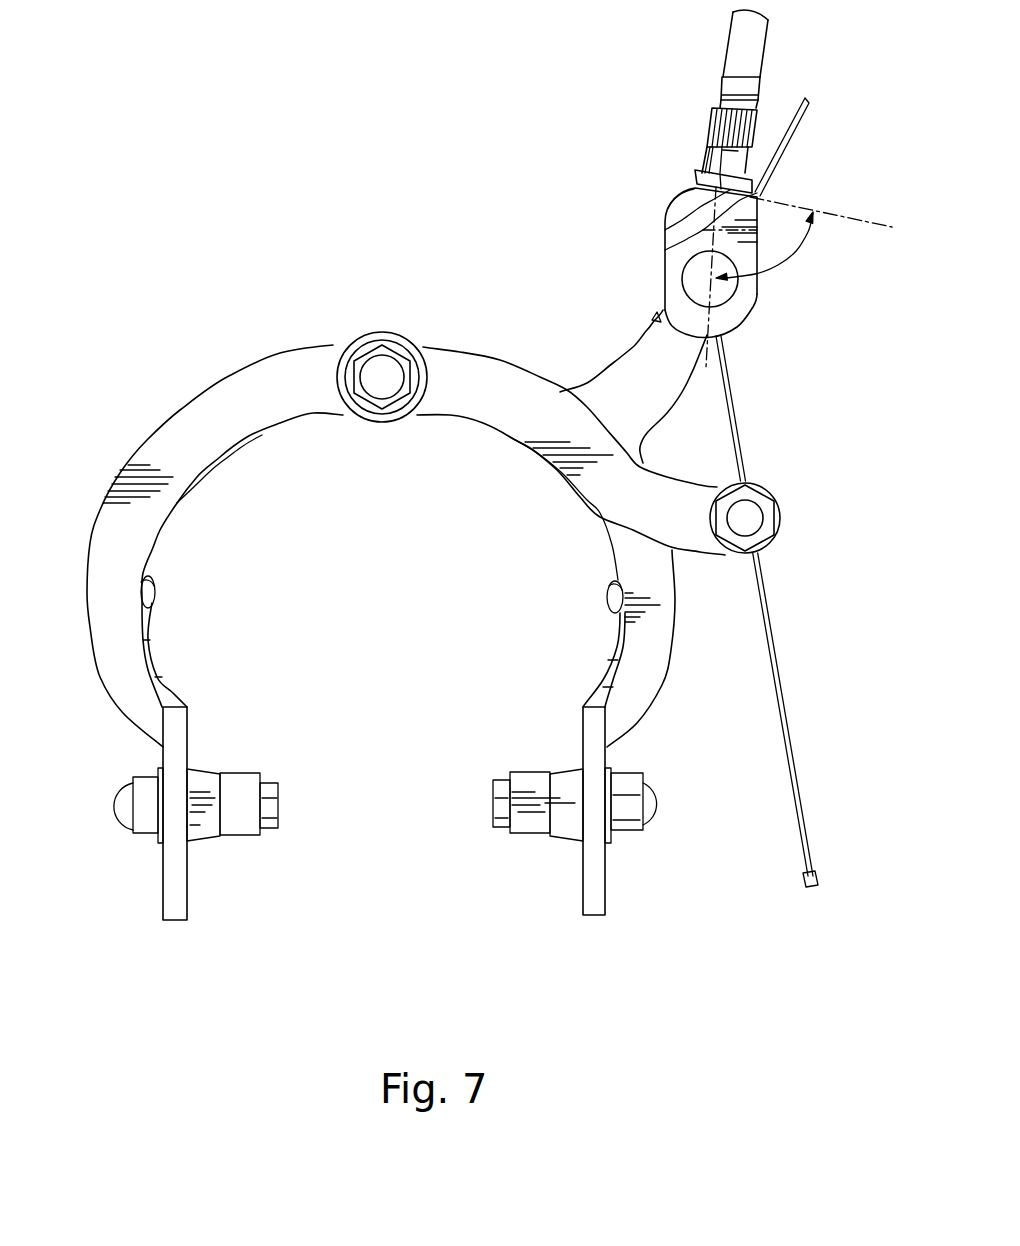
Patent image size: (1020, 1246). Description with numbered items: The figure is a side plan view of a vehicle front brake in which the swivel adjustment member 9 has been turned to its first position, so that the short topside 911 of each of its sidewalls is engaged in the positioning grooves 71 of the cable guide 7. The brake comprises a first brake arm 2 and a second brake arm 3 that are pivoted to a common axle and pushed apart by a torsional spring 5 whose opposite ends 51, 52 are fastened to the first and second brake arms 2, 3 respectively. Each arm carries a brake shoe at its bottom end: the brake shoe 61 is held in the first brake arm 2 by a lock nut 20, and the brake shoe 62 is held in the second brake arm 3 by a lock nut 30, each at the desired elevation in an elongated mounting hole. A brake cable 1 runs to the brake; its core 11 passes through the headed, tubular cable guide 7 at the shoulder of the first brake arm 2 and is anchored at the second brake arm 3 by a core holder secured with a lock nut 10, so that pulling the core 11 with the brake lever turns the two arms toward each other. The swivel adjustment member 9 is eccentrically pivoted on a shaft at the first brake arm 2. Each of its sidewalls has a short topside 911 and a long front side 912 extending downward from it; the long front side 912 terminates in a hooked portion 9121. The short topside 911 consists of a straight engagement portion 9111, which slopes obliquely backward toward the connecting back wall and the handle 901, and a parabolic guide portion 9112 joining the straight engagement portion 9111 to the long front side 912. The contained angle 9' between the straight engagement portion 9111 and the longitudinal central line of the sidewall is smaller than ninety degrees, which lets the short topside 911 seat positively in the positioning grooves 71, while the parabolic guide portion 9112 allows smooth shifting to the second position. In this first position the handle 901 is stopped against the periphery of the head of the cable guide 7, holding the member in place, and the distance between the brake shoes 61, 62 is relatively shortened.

The brake cable 1 is at (772, 46).
The positioning grooves 71 is at (715, 150).
The cable guide 7 is at (688, 174).
The parabolic guide portion 9112 is at (681, 197).
The swivel adjustment member 9 is at (651, 262).
The short topside 911 is at (665, 230).
The straight engagement portion 9111 is at (665, 250).
The long front side 912 is at (662, 262).
The hooked portion 9121 is at (637, 350).
The handle 901 is at (797, 125).
The contained angle 9' is at (804, 244).
The lock nut 10 is at (755, 508).
The core 11 is at (776, 633).
The torsional spring 5 is at (223, 477).
The end of torsional spring 52 is at (160, 594).
The end of torsional spring 51 is at (607, 606).
The second brake arm 3 is at (125, 724).
The first brake arm 2 is at (640, 728).
The lock nut 30 is at (145, 838).
The brake shoe 62 is at (246, 838).
The brake shoe 61 is at (534, 835).
The lock nut 20 is at (630, 835).